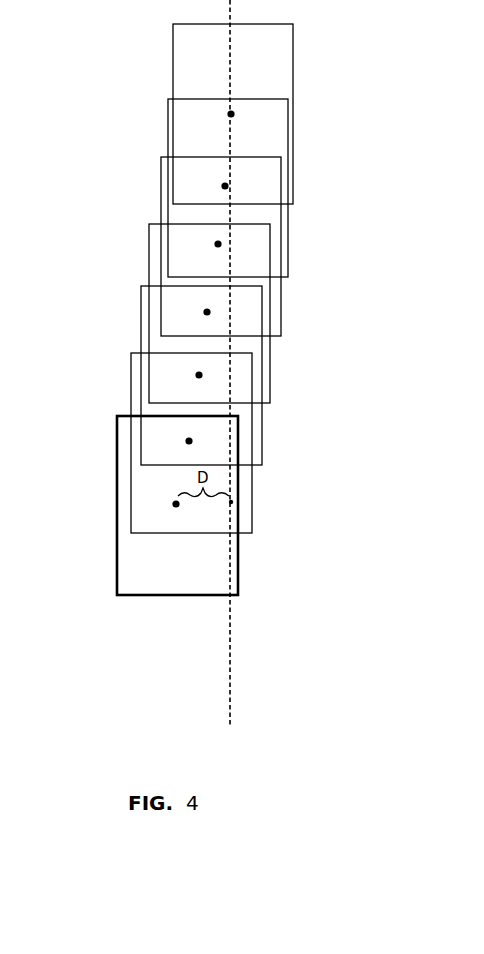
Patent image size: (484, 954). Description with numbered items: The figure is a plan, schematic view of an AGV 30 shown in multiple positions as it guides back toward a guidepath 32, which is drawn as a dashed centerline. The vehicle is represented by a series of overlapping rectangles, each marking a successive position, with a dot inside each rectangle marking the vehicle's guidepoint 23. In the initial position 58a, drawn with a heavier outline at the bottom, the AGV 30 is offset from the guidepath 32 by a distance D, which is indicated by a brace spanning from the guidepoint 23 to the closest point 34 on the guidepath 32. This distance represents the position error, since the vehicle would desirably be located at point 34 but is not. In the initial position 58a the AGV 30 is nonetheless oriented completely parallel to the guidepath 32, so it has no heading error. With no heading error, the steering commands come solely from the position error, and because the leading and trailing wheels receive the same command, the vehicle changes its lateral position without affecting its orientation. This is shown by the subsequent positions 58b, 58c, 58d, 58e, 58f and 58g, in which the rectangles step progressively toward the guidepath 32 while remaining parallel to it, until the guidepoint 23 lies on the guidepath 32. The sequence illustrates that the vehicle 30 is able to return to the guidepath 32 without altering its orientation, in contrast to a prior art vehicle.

The guidepoint 23 is at (199, 375).
The AGV 30 is at (117, 565).
The guidepath 32 is at (230, 657).
The closest point 34 is at (232, 502).
The initial position 58a is at (239, 582).
The vehicle position 58b is at (253, 482).
The vehicle position 58c is at (262, 428).
The vehicle position 58d is at (270, 370).
The vehicle position 58e is at (281, 317).
The vehicle position 58f is at (289, 250).
The vehicle position 58g is at (294, 183).